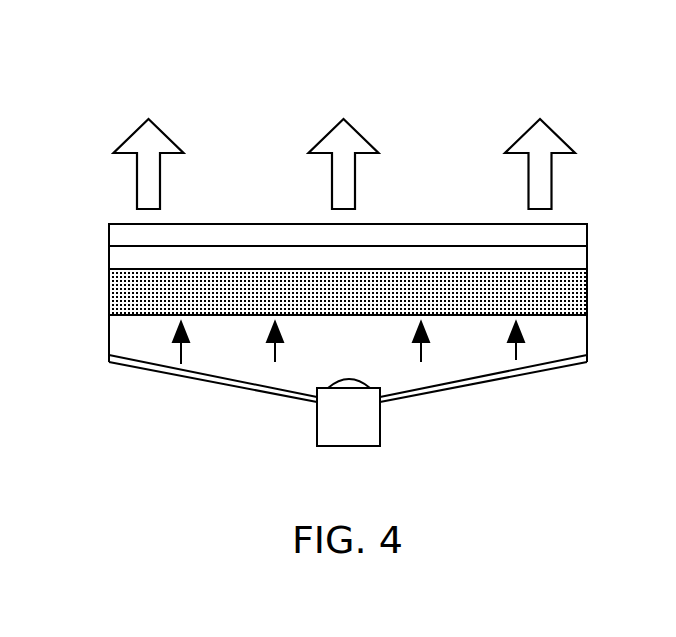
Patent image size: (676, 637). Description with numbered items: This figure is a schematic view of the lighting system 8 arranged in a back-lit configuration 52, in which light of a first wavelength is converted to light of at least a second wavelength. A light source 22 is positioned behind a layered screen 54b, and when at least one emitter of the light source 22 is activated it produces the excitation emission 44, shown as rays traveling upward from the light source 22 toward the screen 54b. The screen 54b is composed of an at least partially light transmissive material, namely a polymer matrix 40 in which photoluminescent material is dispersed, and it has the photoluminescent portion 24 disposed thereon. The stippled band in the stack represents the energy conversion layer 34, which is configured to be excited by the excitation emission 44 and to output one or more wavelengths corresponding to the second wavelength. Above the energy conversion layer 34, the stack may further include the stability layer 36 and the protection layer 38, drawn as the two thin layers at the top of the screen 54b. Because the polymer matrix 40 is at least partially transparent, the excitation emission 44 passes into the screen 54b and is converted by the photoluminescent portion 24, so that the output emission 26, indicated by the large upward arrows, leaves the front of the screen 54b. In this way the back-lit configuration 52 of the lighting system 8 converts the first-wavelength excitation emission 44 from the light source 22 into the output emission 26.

The back-lit configuration 52 is at (460, 82).
The lighting system 8 is at (340, 286).
The output emission 26 is at (137, 185).
The photoluminescent portion 24 is at (590, 212).
The protection layer 38 is at (113, 233).
The stability layer 36 is at (115, 257).
The screen 54b is at (115, 293).
The energy conversion layer 34 is at (575, 282).
The polymer matrix 40 is at (580, 297).
The light source 22 is at (348, 412).
The excitation emission 44 is at (180, 350).